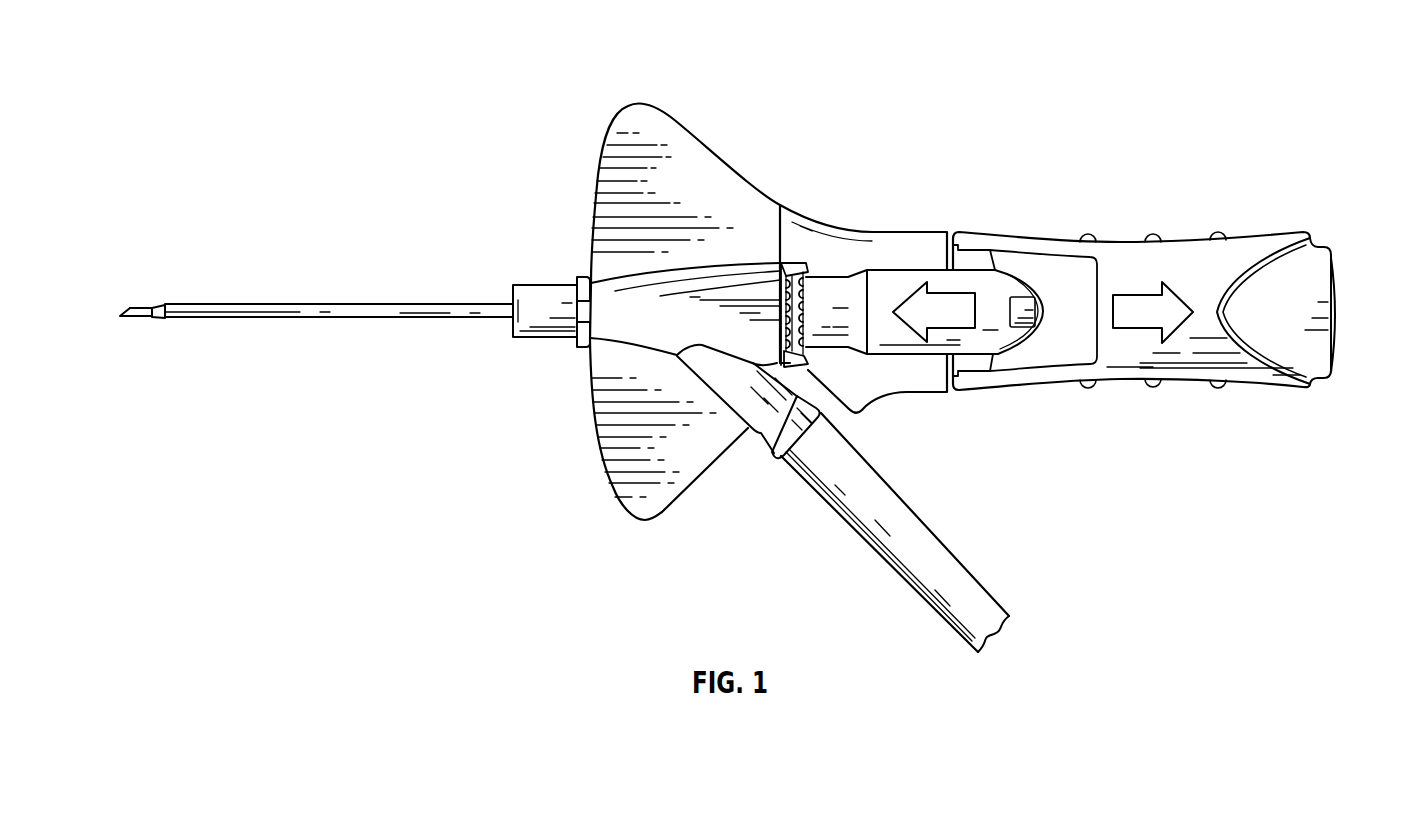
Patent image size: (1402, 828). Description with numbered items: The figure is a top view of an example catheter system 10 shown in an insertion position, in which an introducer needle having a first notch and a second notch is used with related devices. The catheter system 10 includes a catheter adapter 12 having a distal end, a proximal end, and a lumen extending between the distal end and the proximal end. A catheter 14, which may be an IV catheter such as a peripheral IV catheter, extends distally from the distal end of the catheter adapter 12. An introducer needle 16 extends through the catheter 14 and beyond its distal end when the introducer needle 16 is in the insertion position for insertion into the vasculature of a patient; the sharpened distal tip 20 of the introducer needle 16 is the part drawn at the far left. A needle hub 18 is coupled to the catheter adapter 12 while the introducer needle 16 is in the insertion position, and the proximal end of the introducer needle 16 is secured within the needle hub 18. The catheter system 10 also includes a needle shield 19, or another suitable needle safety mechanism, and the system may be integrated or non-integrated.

The catheter system 10 is at (861, 76).
The catheter adapter 12 is at (592, 433).
The catheter 14 is at (258, 311).
The introducer needle 16 is at (134, 309).
The needle hub 18 is at (1239, 235).
The needle shield 19 is at (906, 228).
The needle tip 20 is at (120, 311).